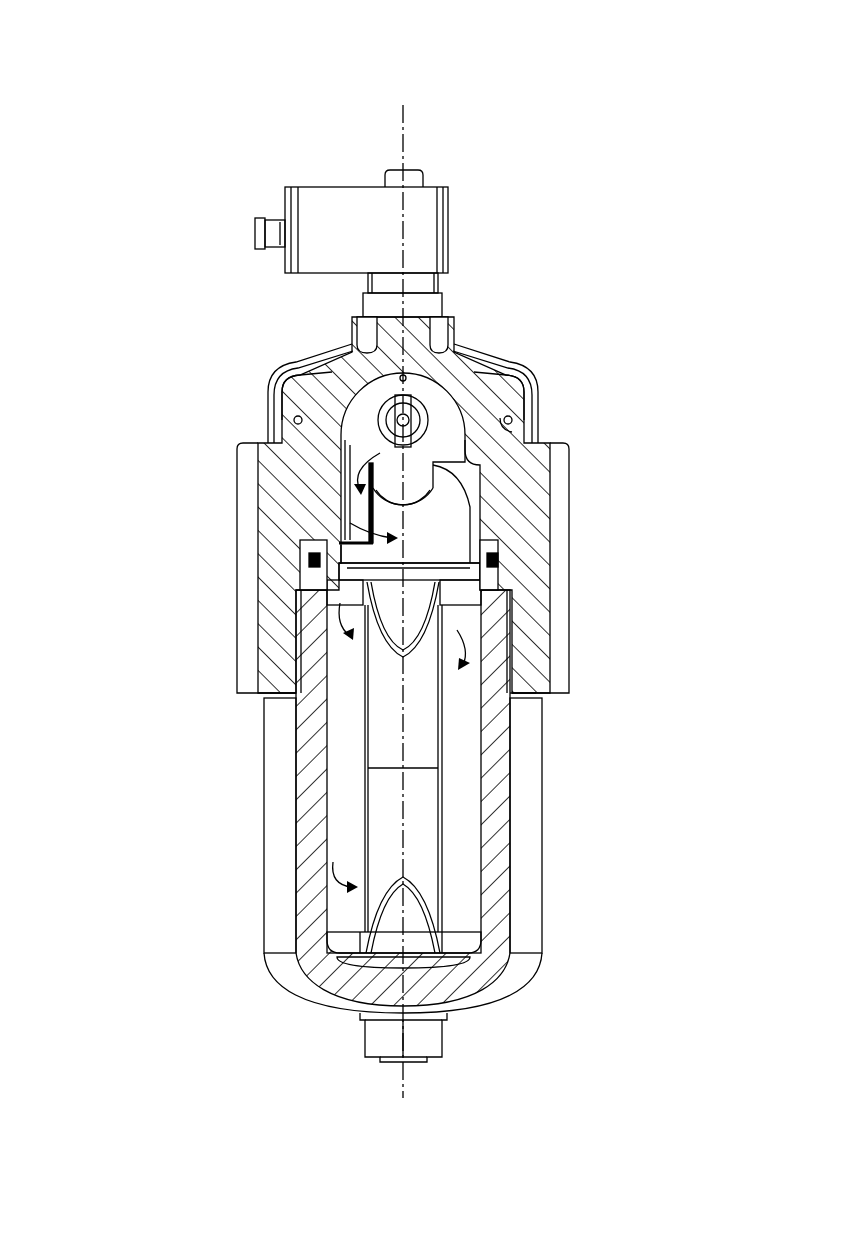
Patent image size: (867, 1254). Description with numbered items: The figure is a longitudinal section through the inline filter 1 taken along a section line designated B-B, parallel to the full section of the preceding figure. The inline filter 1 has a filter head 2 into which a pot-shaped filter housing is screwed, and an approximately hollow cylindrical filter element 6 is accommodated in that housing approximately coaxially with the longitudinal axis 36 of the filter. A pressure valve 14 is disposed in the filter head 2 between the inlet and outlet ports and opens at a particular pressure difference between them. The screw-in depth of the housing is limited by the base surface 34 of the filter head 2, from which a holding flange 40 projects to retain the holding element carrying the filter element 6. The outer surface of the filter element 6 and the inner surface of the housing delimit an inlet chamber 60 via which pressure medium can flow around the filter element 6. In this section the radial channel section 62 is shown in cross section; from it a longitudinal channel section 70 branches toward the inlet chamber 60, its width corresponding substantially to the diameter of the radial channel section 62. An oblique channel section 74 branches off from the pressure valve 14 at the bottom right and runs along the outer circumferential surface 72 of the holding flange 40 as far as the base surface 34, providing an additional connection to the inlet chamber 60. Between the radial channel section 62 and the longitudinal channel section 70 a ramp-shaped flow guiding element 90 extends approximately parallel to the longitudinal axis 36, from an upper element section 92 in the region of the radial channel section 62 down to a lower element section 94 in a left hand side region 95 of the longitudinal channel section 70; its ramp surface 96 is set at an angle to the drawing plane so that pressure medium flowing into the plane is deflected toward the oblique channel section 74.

The inline filter 1 is at (112, 150).
The filter head 2 is at (330, 532).
The filter element 6 is at (420, 755).
The pressure valve 14 is at (345, 405).
The base surface 34 is at (500, 560).
The longitudinal axis 36 is at (403, 126).
The holding flange 40 is at (455, 508).
The inlet chamber 60 is at (462, 853).
The radial channel section 62 is at (440, 400).
The longitudinal channel section 70 is at (413, 525).
The outer circumferential surface 72 is at (508, 657).
The oblique channel section 74 is at (495, 427).
The flow guiding element 90 is at (340, 467).
The element section 92 is at (340, 440).
The lower element section 94 is at (340, 517).
The left hand side region 95 is at (340, 495).
The ramp surface 96 is at (318, 558).